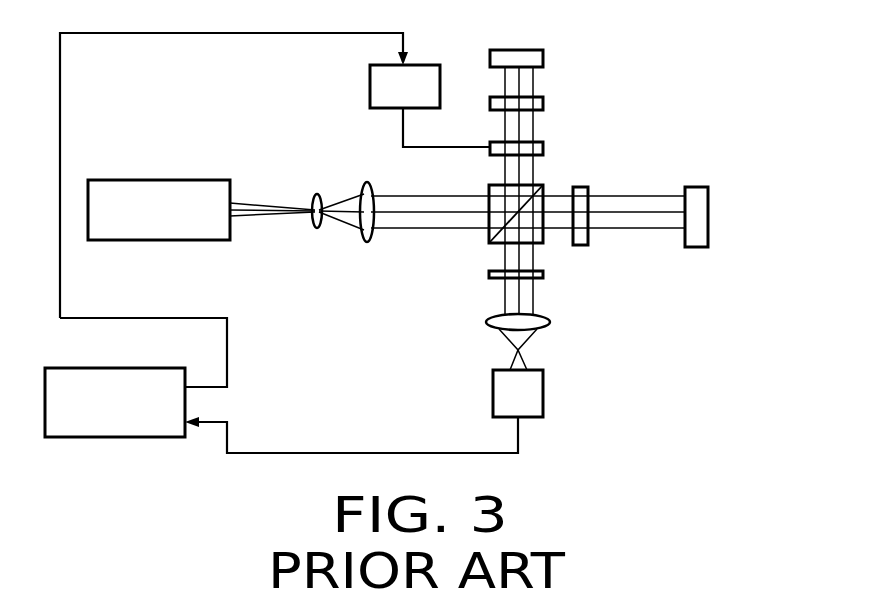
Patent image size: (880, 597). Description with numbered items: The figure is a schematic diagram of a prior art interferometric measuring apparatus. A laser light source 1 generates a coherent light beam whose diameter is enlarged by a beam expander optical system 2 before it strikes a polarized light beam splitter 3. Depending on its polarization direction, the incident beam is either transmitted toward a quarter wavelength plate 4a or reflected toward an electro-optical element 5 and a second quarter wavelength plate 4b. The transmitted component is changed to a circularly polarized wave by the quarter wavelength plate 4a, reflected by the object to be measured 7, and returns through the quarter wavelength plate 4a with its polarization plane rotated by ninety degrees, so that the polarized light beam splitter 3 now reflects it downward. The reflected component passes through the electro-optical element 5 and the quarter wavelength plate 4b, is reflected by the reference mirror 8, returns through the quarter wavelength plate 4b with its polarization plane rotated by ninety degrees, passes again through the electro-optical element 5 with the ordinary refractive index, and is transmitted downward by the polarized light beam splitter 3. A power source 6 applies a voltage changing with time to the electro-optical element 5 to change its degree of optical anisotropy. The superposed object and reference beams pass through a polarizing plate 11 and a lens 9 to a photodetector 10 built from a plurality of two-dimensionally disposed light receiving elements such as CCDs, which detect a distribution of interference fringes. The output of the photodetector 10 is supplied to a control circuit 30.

The laser light source 1 is at (173, 190).
The beam expander optical system 2 is at (373, 178).
The polarized light beam splitter 3 is at (490, 227).
The quarter wavelength plate 4a is at (590, 188).
The quarter wavelength plate 4b is at (545, 103).
The electro-optical element 5 is at (545, 150).
The power source 6 is at (418, 70).
The object to be measured 7 is at (708, 188).
The reference mirror 8 is at (545, 50).
The lens 9 is at (552, 322).
The photodetector 10 is at (533, 393).
The polarizing plate 11 is at (545, 275).
The control circuit 30 is at (123, 380).